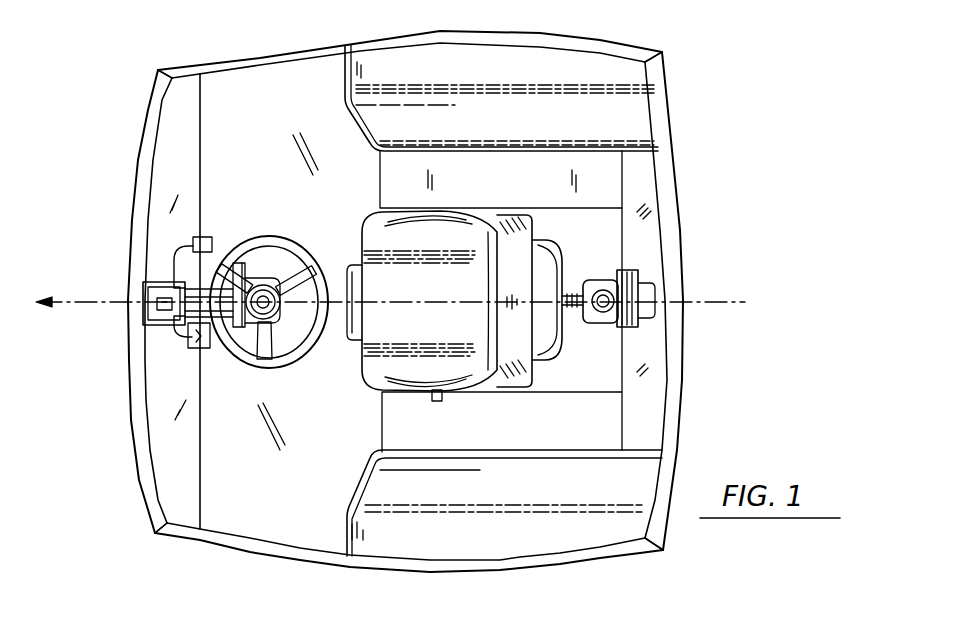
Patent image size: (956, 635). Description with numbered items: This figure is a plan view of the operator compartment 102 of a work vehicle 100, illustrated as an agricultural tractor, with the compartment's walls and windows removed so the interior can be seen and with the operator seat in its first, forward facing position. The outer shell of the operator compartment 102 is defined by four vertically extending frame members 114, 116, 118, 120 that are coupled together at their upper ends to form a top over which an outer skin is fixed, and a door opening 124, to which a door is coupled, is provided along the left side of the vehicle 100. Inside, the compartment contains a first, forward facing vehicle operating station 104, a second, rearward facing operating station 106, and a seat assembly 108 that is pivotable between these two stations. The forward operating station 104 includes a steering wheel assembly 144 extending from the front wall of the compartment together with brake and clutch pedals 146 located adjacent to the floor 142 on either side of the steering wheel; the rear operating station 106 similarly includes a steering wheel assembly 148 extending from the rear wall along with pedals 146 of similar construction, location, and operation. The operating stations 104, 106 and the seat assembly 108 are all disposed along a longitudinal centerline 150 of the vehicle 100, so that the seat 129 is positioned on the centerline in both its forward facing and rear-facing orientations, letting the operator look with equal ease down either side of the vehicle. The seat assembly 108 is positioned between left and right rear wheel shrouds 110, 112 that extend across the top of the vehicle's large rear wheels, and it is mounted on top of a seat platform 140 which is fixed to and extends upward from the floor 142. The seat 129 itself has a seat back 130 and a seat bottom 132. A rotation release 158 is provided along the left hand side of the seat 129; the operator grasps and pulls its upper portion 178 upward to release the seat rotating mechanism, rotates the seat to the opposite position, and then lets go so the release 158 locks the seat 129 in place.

The work vehicle 100 is at (792, 136).
The operator compartment 102 is at (680, 195).
The first, forward facing vehicle operating station 104 is at (168, 353).
The second, rearward facing operating station 106 is at (660, 275).
The seat assembly 108 is at (362, 397).
The rear wheel shroud 110 is at (532, 463).
The rear wheel shroud 112 is at (526, 136).
The vertically extending frame member 114 is at (665, 550).
The vertically extending frame member 116 is at (688, 20).
The vertically extending frame member 118 is at (158, 70).
The vertically extending frame member 120 is at (155, 533).
The door opening 124 is at (262, 563).
The seat 129 is at (368, 366).
The seat back 130 is at (542, 258).
The seat bottom 132 is at (446, 297).
The seat platform 140 is at (454, 212).
The floor 142 is at (262, 479).
The steering wheel assembly 144 is at (180, 276).
The brake and clutch pedals 146 is at (212, 238).
The steering wheel assembly 148 is at (636, 323).
The longitudinal centerline 150 is at (762, 303).
The rotation release 158 is at (433, 402).
The upper portion 178 is at (424, 402).